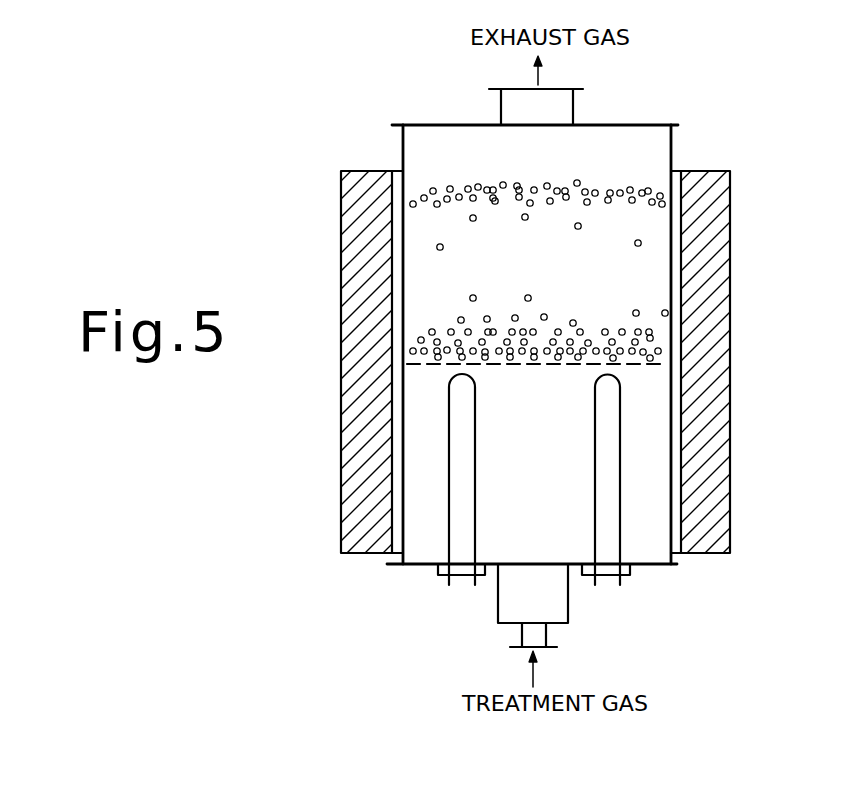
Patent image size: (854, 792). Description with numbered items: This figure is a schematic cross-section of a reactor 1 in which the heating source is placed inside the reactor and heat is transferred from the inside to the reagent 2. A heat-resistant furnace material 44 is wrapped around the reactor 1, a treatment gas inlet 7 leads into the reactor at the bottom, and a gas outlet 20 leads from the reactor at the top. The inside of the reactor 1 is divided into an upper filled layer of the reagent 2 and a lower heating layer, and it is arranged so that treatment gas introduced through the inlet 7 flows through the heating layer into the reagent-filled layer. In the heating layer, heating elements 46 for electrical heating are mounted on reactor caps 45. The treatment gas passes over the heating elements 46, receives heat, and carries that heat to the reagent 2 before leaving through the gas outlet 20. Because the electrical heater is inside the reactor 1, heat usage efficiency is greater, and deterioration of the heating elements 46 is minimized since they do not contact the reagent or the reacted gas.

The reactor 1 is at (612, 135).
The reagent 2 is at (522, 192).
The treatment gas inlet 7 is at (537, 652).
The gas outlet 20 is at (550, 89).
The heat-resistant furnace material 44 is at (342, 328).
The reactor caps 45 is at (653, 568).
The heating elements 46 is at (477, 437).